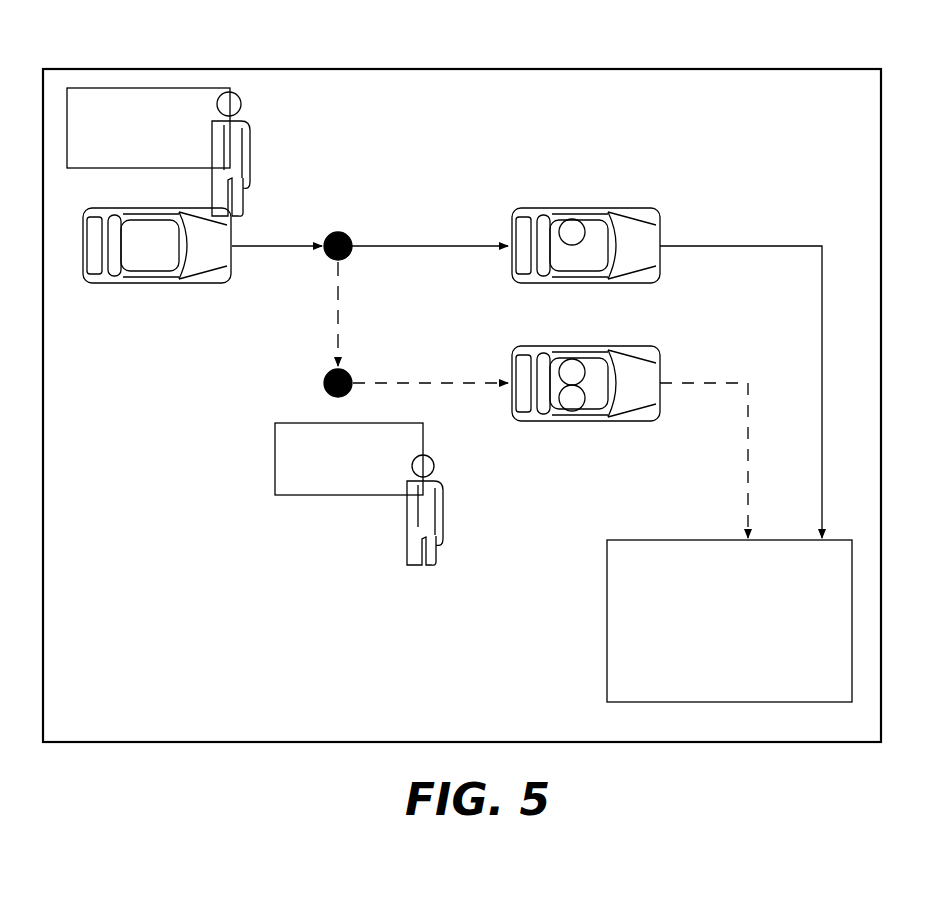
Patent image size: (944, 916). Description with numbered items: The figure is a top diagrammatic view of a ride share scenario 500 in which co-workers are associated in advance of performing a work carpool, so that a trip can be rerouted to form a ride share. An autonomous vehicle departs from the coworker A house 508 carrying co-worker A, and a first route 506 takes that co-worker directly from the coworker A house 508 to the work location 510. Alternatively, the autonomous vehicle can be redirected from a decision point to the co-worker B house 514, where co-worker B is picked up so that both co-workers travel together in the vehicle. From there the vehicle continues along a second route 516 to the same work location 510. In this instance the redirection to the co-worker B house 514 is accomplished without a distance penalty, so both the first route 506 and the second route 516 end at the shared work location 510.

The ride share scenario 500 is at (310, 103).
The first route 506 is at (765, 245).
The coworker A house 508 is at (148, 128).
The work location 510 is at (729, 621).
The co-worker B house 514 is at (349, 459).
The second route 516 is at (717, 378).